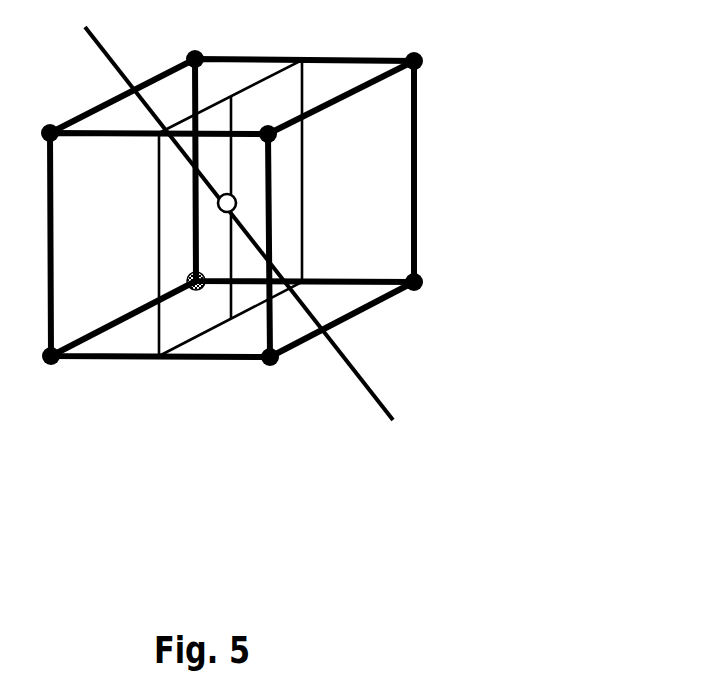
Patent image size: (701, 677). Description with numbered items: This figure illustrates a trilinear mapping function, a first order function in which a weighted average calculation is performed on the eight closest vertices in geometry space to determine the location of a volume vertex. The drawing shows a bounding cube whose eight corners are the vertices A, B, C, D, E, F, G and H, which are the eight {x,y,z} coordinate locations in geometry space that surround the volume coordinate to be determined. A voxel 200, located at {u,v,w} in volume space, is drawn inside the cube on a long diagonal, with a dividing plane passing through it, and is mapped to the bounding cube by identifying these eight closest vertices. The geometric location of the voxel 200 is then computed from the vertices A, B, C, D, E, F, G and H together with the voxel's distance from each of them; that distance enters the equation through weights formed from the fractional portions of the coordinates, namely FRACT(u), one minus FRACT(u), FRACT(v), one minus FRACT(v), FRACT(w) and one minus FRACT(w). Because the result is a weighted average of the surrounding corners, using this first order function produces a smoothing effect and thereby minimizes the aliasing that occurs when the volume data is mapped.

The voxel 200 is at (236, 203).
The vertex a A is at (41, 121).
The vertex b B is at (272, 119).
The vertex c C is at (41, 369).
The vertex d D is at (278, 373).
The vertex e E is at (195, 43).
The vertex f F is at (416, 47).
The vertex g G is at (188, 265).
The vertex h H is at (428, 281).